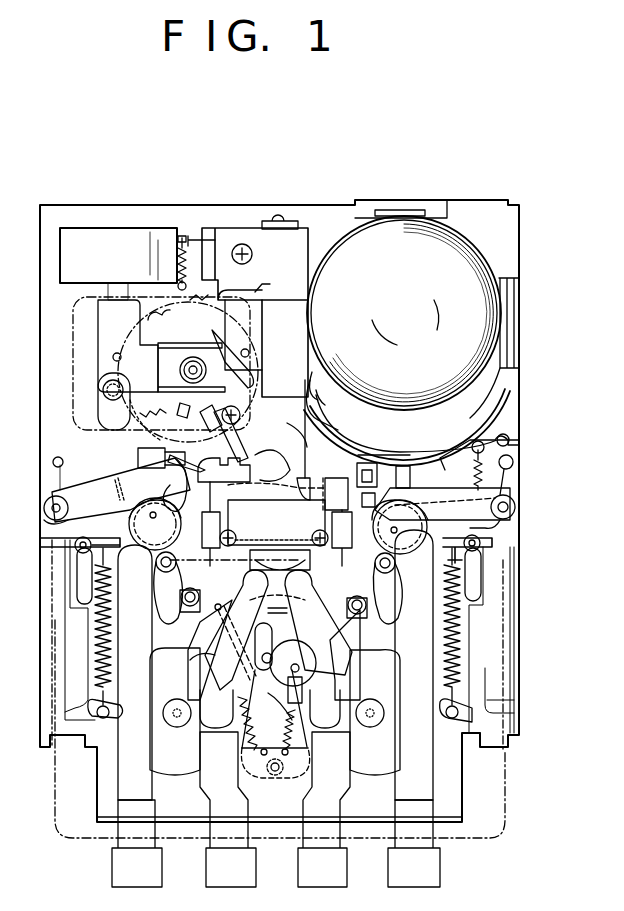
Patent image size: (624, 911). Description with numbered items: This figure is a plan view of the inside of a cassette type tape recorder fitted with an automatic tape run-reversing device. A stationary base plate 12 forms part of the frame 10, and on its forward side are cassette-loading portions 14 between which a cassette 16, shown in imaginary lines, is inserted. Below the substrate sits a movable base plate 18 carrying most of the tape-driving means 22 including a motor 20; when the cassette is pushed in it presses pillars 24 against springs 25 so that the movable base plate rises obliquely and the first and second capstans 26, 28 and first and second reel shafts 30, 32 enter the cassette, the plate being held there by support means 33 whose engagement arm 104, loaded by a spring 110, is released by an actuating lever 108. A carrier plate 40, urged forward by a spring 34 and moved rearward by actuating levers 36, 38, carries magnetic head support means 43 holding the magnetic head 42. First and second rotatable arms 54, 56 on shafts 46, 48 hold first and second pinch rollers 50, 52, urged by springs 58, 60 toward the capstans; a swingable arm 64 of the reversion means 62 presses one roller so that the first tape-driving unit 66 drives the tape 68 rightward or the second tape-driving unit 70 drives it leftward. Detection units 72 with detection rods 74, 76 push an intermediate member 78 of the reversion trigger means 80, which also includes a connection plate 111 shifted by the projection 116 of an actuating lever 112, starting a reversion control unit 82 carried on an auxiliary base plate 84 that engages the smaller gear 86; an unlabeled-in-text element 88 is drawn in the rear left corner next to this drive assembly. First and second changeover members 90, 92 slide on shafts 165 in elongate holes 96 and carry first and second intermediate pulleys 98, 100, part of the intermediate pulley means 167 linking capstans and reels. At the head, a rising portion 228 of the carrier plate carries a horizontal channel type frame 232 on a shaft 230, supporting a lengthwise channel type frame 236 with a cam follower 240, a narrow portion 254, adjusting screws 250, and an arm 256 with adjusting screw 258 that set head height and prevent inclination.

The frame 10 is at (455, 212).
The stationary base plate 12 is at (476, 212).
The cassette-loading portions 14 is at (490, 670).
The cassette 16 is at (500, 790).
The movable base plate 18 is at (372, 418).
The motor 20 is at (433, 254).
The tape-driving means 22 is at (300, 765).
The pillars 24 is at (48, 544).
The springs 25 is at (470, 618).
The first capstan 26 is at (392, 528).
The second capstan 28 is at (118, 548).
The first reel shaft 30 is at (375, 712).
The second reel shaft 32 is at (175, 711).
The support means 33 is at (405, 452).
The spring 34 is at (182, 235).
The actuating lever 36 is at (250, 867).
The actuating lever 38 is at (345, 867).
The carrier plate 40 is at (318, 560).
The magnetic head 42 is at (235, 597).
The magnetic head support means 43 is at (257, 283).
The shaft 46 is at (510, 500).
The shaft 48 is at (44, 508).
The first pinch roller 50 is at (425, 534).
The second pinch roller 52 is at (168, 498).
The first rotatable arm 54 is at (505, 522).
The second rotatable arm 56 is at (46, 520).
The spring 58 is at (453, 495).
The spring 60 is at (121, 488).
The reversion means 62 is at (310, 378).
The swingable arm 64 is at (318, 390).
The first tape-driving unit 66 is at (497, 575).
The magnetic tape 68 is at (187, 589).
The second tape-driving unit 70 is at (128, 522).
The detection units 72 is at (300, 522).
The detection rod 74 is at (352, 460).
The detection rod 76 is at (172, 562).
The intermediate member 78 is at (272, 475).
The reversion trigger means 80 is at (312, 420).
The reversion control unit 82 is at (160, 324).
The auxiliary base plate 84 is at (72, 318).
The smaller gear 86 is at (98, 385).
The motor 88 is at (104, 245).
The first changeover member 90 is at (351, 655).
The second changeover member 92 is at (234, 632).
The elongate holes 96 is at (380, 612).
The first intermediate pulley 98 is at (285, 671).
The second intermediate pulley 100 is at (212, 662).
The engagement arm 104 is at (432, 425).
The actuating lever 108 is at (442, 864).
The spring 110 is at (505, 455).
The connection plate 111 is at (174, 457).
The actuating lever 112 is at (112, 864).
The projection 116 is at (140, 465).
The shafts 165 is at (275, 665).
The intermediate pulley means 167 is at (305, 745).
The rising portion 228 is at (295, 232).
The shaft 230 is at (282, 220).
The horizontal channel type frame 232 is at (192, 235).
The channel type frame 236 is at (290, 431).
The cam follower 240 is at (238, 445).
The adjusting screws 250 is at (232, 535).
The narrow portion 254 is at (258, 497).
The arm 256 is at (236, 240).
The adjusting screw 258 is at (246, 245).